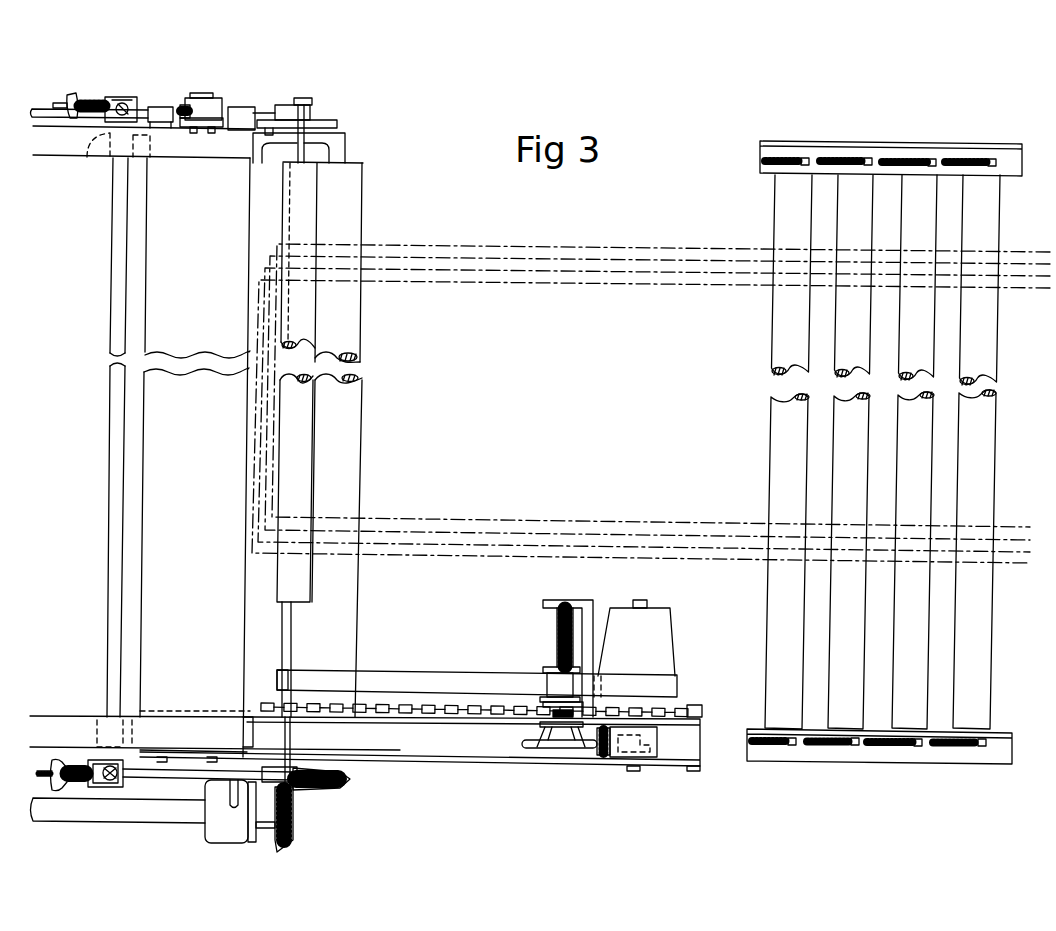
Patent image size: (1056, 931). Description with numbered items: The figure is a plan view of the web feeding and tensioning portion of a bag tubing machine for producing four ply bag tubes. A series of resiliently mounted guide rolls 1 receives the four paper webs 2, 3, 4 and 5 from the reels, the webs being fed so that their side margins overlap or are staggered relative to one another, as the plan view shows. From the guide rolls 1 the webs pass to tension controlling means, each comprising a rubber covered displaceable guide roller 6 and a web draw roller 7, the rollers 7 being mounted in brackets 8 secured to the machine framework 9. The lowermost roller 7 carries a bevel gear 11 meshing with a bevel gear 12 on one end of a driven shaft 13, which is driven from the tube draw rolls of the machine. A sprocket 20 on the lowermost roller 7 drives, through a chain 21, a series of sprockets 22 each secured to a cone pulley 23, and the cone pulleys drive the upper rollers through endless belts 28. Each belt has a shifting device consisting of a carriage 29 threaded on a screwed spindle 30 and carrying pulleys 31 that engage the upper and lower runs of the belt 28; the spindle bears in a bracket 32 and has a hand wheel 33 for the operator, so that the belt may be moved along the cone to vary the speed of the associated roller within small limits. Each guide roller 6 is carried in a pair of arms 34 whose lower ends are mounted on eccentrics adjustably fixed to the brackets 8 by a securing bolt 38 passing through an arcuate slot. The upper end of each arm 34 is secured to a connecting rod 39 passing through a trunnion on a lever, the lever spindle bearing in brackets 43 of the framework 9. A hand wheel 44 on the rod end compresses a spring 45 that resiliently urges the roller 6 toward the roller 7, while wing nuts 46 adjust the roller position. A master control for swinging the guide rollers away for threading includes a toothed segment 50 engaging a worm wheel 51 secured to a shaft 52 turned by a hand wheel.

The guide rolls 1 is at (780, 667).
The web 2 is at (503, 245).
The web 3 is at (528, 258).
The web 4 is at (558, 272).
The web 5 is at (593, 283).
The displaceable guide roller 6 is at (313, 193).
The web draw roller 7 is at (362, 218).
The bracket 8 is at (346, 145).
The machine framework 9 is at (144, 441).
The bevel gear 11 is at (350, 782).
The bevel gear 12 is at (294, 823).
The driven shaft 13 is at (122, 812).
The sprocket 20 is at (354, 703).
The chain 21 is at (418, 703).
The sprocket 22 is at (374, 718).
The cone pulley 23 is at (660, 630).
The endless belt 28 is at (463, 677).
The carriage 29 is at (557, 665).
The screwed spindle 30 is at (557, 623).
The pulleys 31 is at (557, 685).
The bracket 32 is at (584, 603).
The hand wheel 33 is at (565, 749).
The arms 34 is at (322, 127).
The securing bolt 38 is at (264, 129).
The connecting rod 39 is at (188, 773).
The brackets 43 is at (92, 150).
The hand wheel 44 is at (57, 758).
The spring 45 is at (80, 765).
The wing nuts 46 is at (118, 778).
The toothed segment 50 is at (220, 122).
The worm wheel 51 is at (188, 130).
The shaft 52 is at (68, 115).